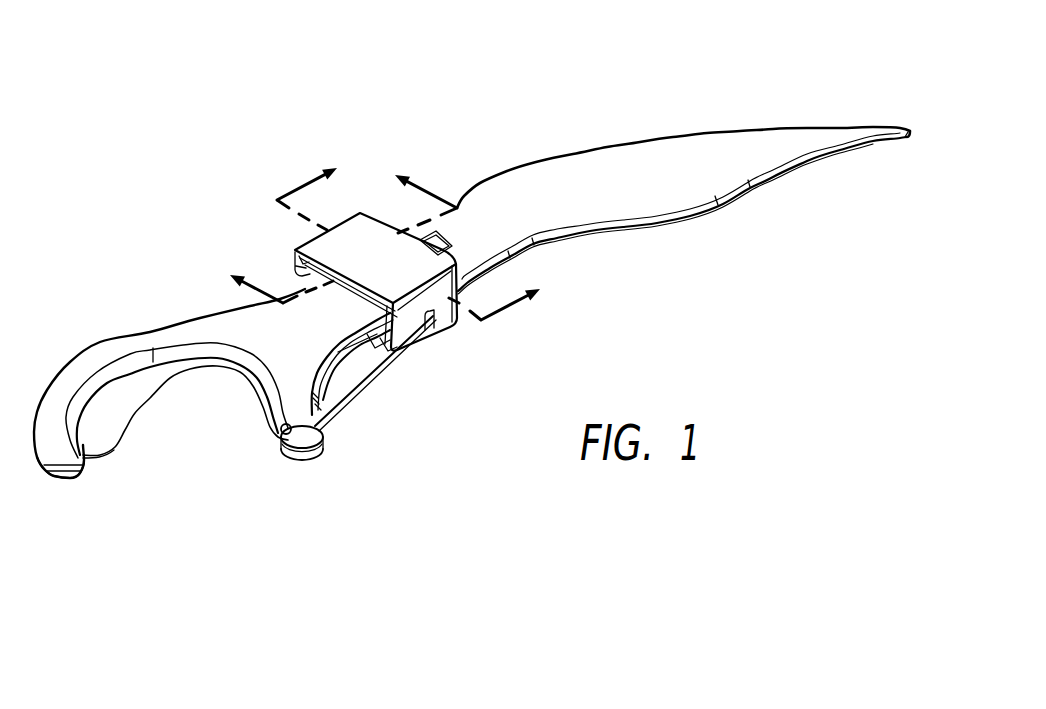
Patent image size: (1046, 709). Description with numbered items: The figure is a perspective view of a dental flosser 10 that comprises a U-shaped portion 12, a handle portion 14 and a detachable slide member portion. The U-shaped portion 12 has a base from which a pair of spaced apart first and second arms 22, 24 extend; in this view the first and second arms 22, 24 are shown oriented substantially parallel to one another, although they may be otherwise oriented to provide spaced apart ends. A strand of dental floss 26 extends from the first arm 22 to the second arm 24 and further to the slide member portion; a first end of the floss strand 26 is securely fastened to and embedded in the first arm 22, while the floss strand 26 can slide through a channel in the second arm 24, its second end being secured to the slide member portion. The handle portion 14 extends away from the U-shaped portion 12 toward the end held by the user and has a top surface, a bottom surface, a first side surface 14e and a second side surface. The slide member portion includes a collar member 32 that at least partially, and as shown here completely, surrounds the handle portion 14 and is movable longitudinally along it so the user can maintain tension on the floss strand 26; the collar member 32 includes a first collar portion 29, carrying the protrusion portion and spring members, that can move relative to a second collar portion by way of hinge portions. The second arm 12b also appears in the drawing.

The dental flosser 10 is at (698, 102).
The U-shaped portion 12 is at (85, 356).
The second arm of handle 12b is at (303, 422).
The handle portion 14 is at (560, 150).
The first side surface 14e is at (730, 157).
The first arm 22 is at (63, 466).
The second arm 24 is at (297, 448).
The floss strand 26 is at (347, 407).
The first collar portion 29 is at (264, 446).
The collar member 32 is at (353, 230).